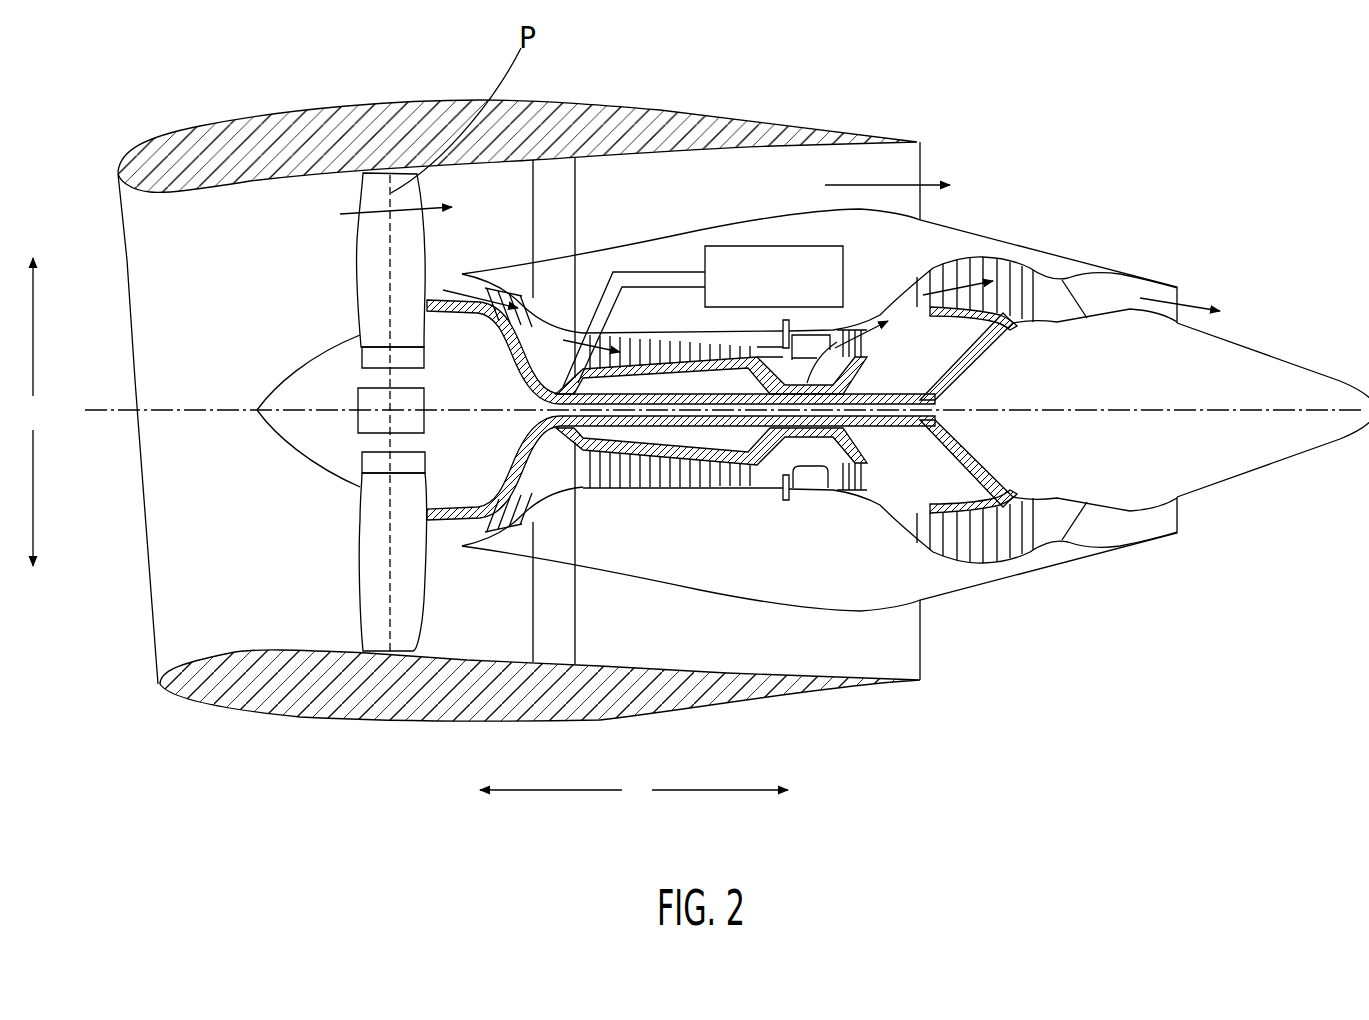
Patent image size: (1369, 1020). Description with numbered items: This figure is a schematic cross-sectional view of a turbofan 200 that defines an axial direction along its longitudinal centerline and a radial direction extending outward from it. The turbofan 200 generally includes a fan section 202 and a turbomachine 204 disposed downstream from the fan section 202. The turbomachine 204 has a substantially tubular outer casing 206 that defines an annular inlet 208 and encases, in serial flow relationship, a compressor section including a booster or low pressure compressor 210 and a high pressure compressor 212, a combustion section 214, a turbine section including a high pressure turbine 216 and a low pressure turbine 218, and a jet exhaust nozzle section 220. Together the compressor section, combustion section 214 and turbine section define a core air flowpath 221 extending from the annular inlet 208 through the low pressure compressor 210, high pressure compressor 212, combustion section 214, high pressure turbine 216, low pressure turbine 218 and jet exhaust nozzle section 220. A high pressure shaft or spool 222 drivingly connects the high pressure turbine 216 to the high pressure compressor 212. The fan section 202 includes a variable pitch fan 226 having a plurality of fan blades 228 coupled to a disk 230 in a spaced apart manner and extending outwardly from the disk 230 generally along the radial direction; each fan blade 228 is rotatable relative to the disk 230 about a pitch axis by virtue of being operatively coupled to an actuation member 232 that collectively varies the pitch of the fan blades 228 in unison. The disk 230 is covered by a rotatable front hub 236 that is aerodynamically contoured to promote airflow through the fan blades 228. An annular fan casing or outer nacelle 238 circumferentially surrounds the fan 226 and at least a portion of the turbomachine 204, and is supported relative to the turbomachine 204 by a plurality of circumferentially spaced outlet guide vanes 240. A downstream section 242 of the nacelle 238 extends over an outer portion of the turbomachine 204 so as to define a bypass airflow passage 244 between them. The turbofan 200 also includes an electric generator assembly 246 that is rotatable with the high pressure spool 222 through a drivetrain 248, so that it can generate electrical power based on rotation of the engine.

The turbofan 200 is at (698, 421).
The fan section 202 is at (269, 355).
The turbomachine 204 is at (823, 358).
The outer casing 206 is at (760, 603).
The annular inlet 208 is at (467, 533).
The low pressure compressor 210 is at (507, 547).
The high pressure compressor 212 is at (610, 485).
The combustion section 214 is at (803, 489).
The high pressure turbine 216 is at (884, 491).
The low pressure turbine 218 is at (1017, 565).
The jet exhaust nozzle section 220 is at (1087, 545).
The core air flowpath 221 is at (560, 493).
The high pressure shaft or spool 222 is at (857, 327).
The variable pitch fan 226 is at (315, 478).
The fan blades 228 is at (358, 582).
The disk 230 is at (377, 358).
The actuation member 232 is at (357, 392).
The front hub 236 is at (268, 429).
The outer nacelle 238 is at (413, 722).
The outlet guide vanes 240 is at (577, 190).
The downstream section of nacelle 242 is at (880, 128).
The bypass airflow passage 244 is at (727, 215).
The electric generator assembly 246 is at (845, 272).
The drivetrain 248 is at (597, 285).